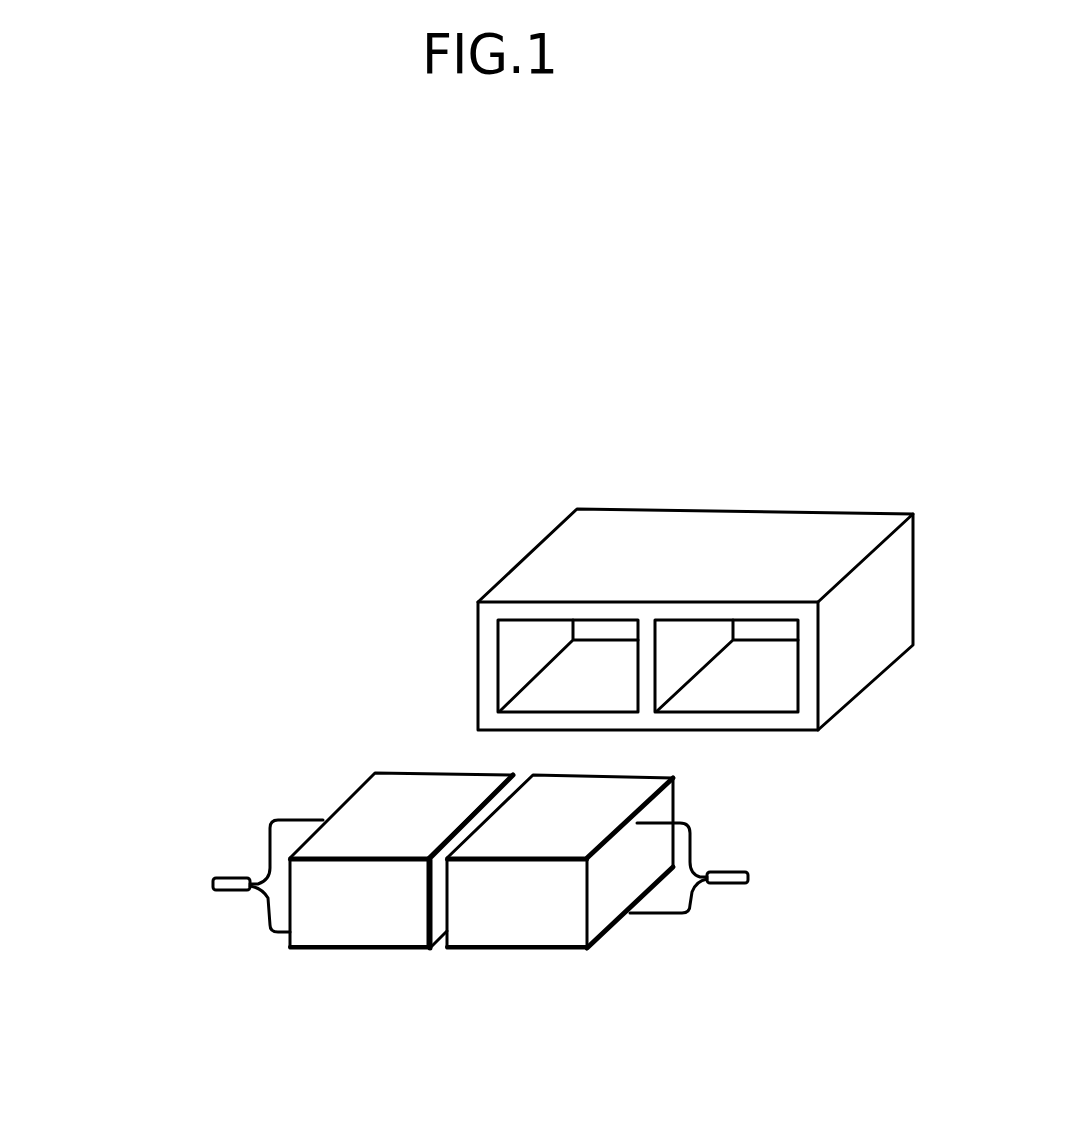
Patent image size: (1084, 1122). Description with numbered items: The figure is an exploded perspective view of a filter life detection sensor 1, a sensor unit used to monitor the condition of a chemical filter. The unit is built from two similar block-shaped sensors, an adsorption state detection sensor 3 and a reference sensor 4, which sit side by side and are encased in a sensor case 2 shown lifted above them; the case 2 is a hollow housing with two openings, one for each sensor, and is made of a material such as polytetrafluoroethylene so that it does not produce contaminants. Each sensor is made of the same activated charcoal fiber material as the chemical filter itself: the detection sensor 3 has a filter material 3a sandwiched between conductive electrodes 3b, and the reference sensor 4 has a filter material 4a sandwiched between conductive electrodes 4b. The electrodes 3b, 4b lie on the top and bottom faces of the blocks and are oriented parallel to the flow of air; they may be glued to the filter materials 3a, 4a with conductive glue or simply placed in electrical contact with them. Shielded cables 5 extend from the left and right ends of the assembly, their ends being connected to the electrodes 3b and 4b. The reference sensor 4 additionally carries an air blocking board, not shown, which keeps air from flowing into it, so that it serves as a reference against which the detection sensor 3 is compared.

The filter life detection sensor 1 is at (325, 520).
The sensor case 2 is at (708, 530).
The adsorption state detection sensor 3 is at (357, 980).
The filter material 3a is at (335, 912).
The conductive electrodes 3b is at (385, 802).
The reference sensor 4 is at (537, 983).
The filter material 4a is at (597, 905).
The conductive electrodes 4b is at (607, 793).
The shielded cables 5 is at (227, 880).